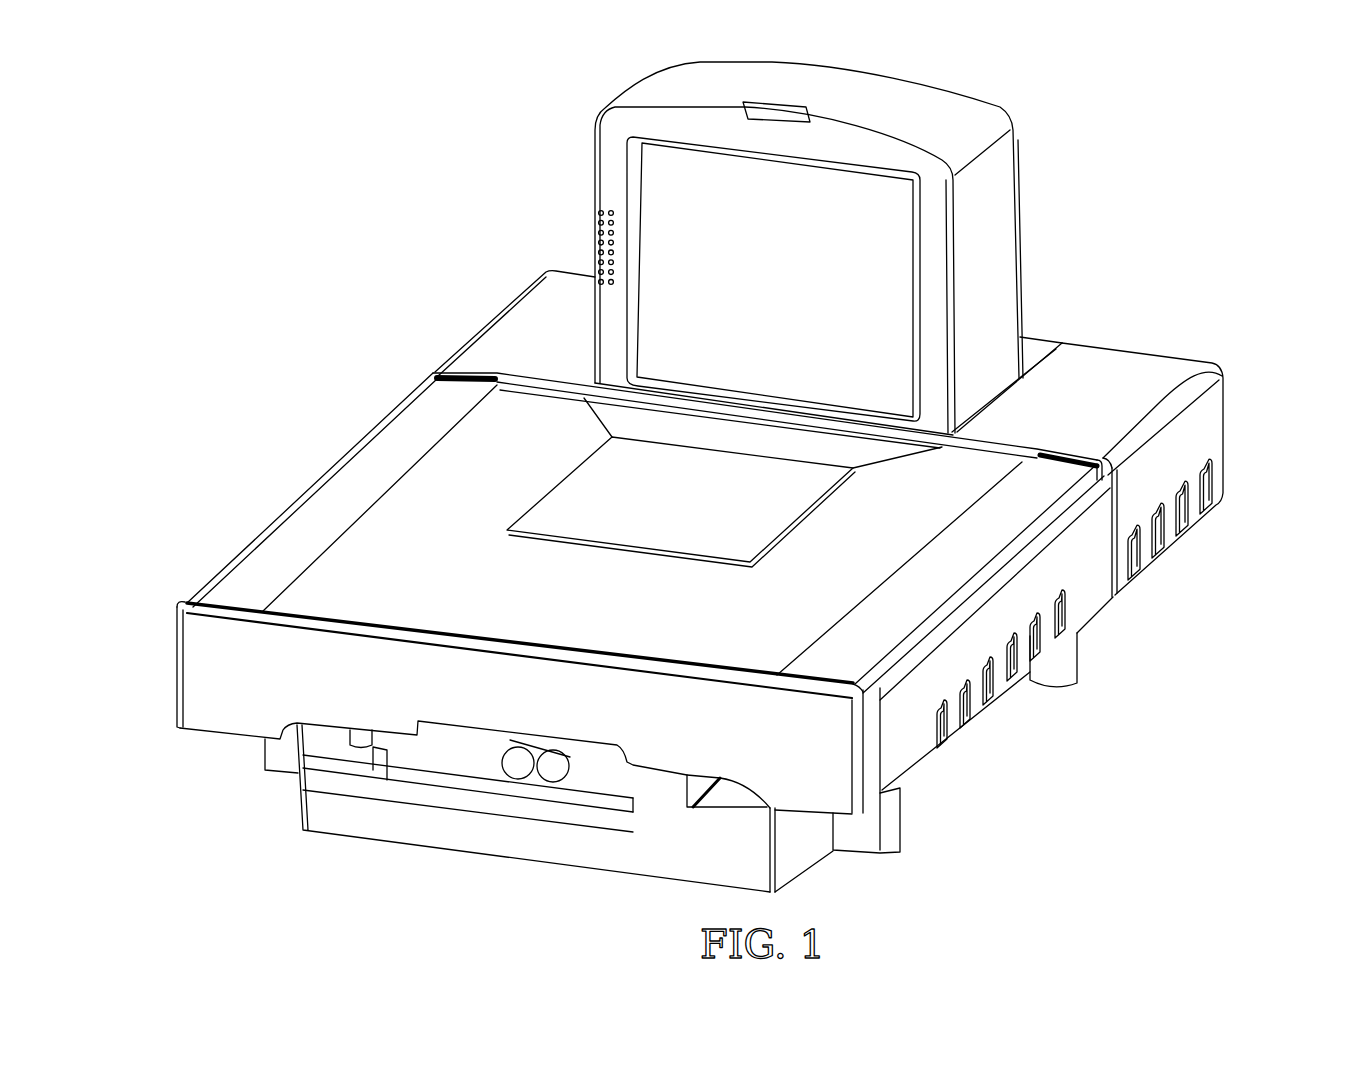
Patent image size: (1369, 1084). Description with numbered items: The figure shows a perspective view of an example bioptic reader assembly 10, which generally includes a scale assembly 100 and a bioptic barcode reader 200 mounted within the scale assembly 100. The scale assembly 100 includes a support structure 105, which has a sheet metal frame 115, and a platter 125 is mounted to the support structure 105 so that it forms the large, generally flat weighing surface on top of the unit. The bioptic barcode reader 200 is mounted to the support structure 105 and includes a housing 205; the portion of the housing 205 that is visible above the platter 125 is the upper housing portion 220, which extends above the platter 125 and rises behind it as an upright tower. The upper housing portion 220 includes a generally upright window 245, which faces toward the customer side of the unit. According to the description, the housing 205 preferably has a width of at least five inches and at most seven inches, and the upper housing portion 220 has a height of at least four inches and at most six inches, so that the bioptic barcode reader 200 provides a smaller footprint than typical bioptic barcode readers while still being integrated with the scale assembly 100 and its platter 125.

The bioptic reader assembly 10 is at (266, 112).
The scale assembly 100 is at (1145, 628).
The support structure 105 is at (915, 797).
The sheet metal frame 115 is at (970, 668).
The platter 125 is at (320, 570).
The bioptic barcode reader 200 is at (1018, 78).
The housing 205 is at (586, 213).
The upper housing portion 220 is at (1020, 212).
The upright window 245 is at (790, 288).